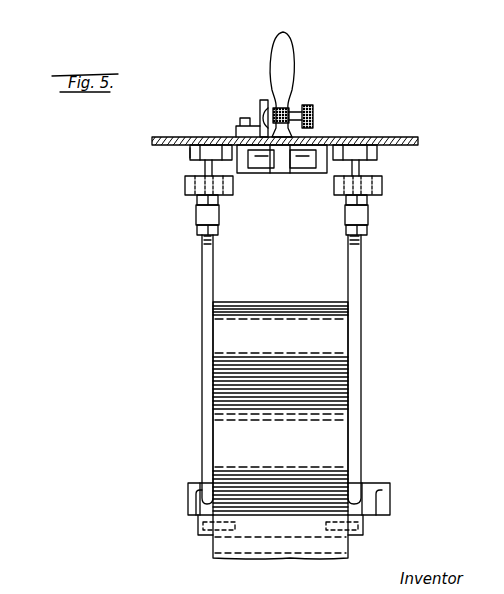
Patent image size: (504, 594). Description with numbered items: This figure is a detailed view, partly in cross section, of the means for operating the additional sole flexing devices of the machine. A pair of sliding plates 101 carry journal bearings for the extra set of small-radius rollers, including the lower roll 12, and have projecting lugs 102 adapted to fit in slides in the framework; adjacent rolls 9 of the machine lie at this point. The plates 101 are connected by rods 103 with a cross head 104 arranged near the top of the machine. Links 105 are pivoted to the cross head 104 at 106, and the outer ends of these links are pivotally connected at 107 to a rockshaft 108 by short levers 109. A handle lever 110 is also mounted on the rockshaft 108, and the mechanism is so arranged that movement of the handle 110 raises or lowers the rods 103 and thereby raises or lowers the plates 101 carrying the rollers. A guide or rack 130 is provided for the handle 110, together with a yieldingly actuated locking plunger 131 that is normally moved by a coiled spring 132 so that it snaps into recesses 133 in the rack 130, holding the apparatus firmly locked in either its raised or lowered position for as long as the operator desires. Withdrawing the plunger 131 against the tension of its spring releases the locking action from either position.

The rolls 9 is at (345, 355).
The lower roll 12 is at (345, 432).
The sliding plates 101 is at (259, 545).
The projecting lugs 102 is at (189, 489).
The rods 103 is at (204, 278).
The cross head 104 is at (197, 213).
The links 105 is at (198, 167).
The pivot 106 is at (186, 184).
The pivotal connection 107 is at (190, 153).
The rockshaft 108 is at (304, 170).
The short levers 109 is at (230, 137).
The handle lever 110 is at (284, 45).
The guide or rack 130 is at (264, 116).
The locking plunger 131 is at (314, 110).
The coiled spring 132 is at (291, 100).
The recesses 133 is at (262, 116).